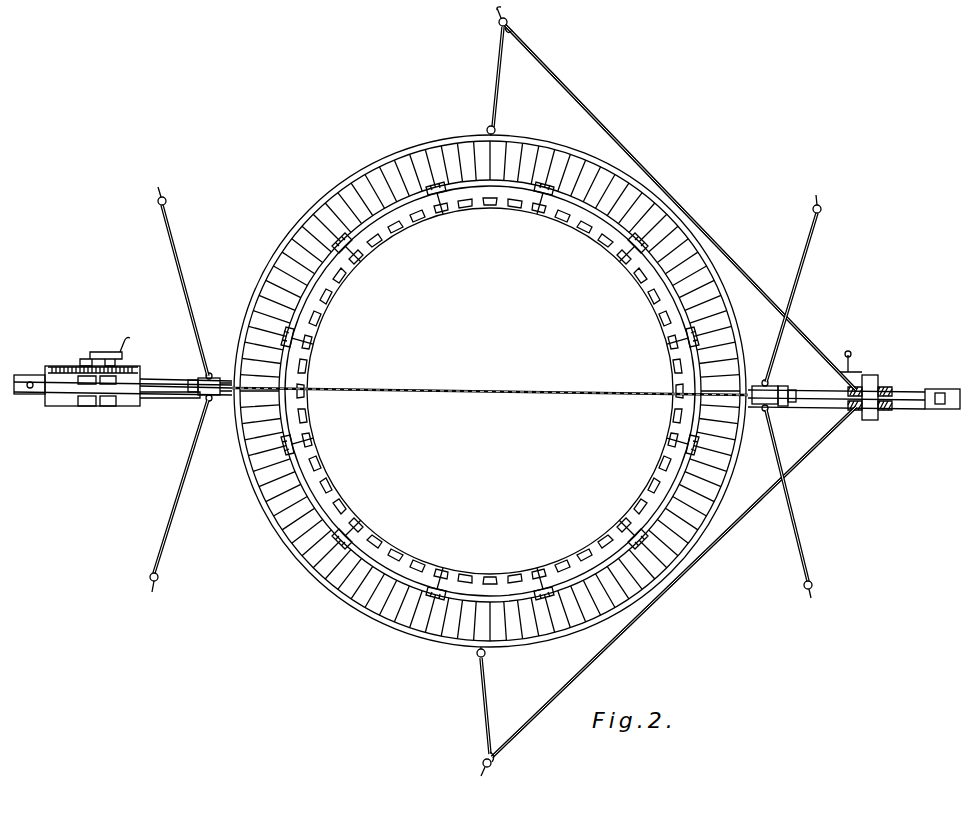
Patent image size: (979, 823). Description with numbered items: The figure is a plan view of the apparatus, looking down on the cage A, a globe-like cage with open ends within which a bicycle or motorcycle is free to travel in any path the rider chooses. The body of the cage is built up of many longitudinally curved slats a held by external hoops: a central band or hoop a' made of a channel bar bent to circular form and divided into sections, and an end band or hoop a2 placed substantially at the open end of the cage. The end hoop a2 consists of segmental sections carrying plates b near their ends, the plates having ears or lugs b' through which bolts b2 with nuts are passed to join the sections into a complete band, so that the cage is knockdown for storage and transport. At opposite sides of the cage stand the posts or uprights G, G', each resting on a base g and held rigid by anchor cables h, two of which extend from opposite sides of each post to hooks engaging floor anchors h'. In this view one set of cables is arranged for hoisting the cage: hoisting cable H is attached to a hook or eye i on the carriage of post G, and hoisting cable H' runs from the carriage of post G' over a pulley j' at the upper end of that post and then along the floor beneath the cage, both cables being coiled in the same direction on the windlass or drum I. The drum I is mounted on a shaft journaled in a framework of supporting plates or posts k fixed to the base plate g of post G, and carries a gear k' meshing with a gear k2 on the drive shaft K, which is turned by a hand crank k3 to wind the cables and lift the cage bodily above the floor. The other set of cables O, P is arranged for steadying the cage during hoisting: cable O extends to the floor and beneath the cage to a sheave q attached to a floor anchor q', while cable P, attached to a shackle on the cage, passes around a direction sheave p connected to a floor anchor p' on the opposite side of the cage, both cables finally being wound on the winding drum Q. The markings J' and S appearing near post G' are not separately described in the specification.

The cage A is at (490, 391).
The slats a is at (490, 422).
The central external band or hoop a' is at (490, 404).
The end band or hoop a2 is at (672, 425).
The plates b is at (490, 391).
The ears or lugs b' is at (490, 346).
The bolts b2 is at (395, 150).
The hoisting cable H' is at (469, 369).
The hoisting cable H is at (186, 414).
The windlass or drum I is at (78, 395).
The drive shaft K is at (84, 406).
The supporting plates or posts k is at (92, 410).
The gear k' is at (93, 343).
The gear k2 is at (93, 352).
The hand crank k3 is at (126, 340).
The base plate g is at (172, 400).
The hook or eye i is at (194, 380).
The post or upright G is at (215, 363).
The post or upright G' is at (765, 368).
The bracket J' is at (788, 374).
The pulley j' is at (802, 417).
The bearing standard S is at (878, 378).
The winding drum Q is at (888, 411).
The cable P is at (655, 172).
The cable O is at (648, 610).
The direction sheave p is at (529, 31).
The floor anchor p' is at (470, 76).
The sheave q is at (460, 700).
The floor anchor q' is at (462, 761).
The anchor cables h is at (493, 393).
The floor anchor h' is at (505, 385).